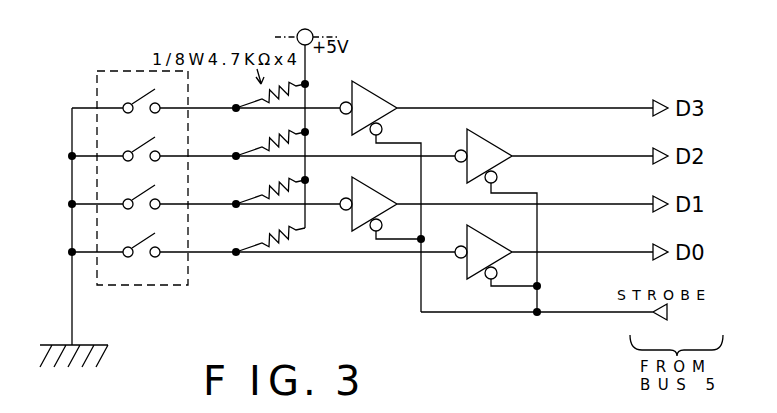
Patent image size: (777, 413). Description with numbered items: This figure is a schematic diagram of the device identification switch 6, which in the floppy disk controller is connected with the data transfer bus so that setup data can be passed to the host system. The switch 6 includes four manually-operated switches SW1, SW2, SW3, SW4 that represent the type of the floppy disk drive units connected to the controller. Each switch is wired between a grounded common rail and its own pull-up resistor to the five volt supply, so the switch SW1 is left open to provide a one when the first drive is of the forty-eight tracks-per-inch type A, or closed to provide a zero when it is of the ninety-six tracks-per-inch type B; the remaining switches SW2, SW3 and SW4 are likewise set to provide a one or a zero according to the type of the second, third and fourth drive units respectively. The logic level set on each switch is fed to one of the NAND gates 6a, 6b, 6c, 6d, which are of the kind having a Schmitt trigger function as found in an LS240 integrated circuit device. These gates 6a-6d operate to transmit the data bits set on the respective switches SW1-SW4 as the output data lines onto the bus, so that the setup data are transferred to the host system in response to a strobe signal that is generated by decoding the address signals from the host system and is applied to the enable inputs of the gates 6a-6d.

The device identification switch 6 is at (451, 73).
The NAND gate 6a is at (383, 99).
The NAND gate 6b is at (498, 147).
The NAND gate 6c is at (366, 187).
The NAND gate 6d is at (485, 240).
The manually-operated switch SW1 is at (154, 257).
The manually-operated switch SW2 is at (154, 209).
The manually-operated switch SW3 is at (154, 161).
The manually-operated switch SW4 is at (154, 113).